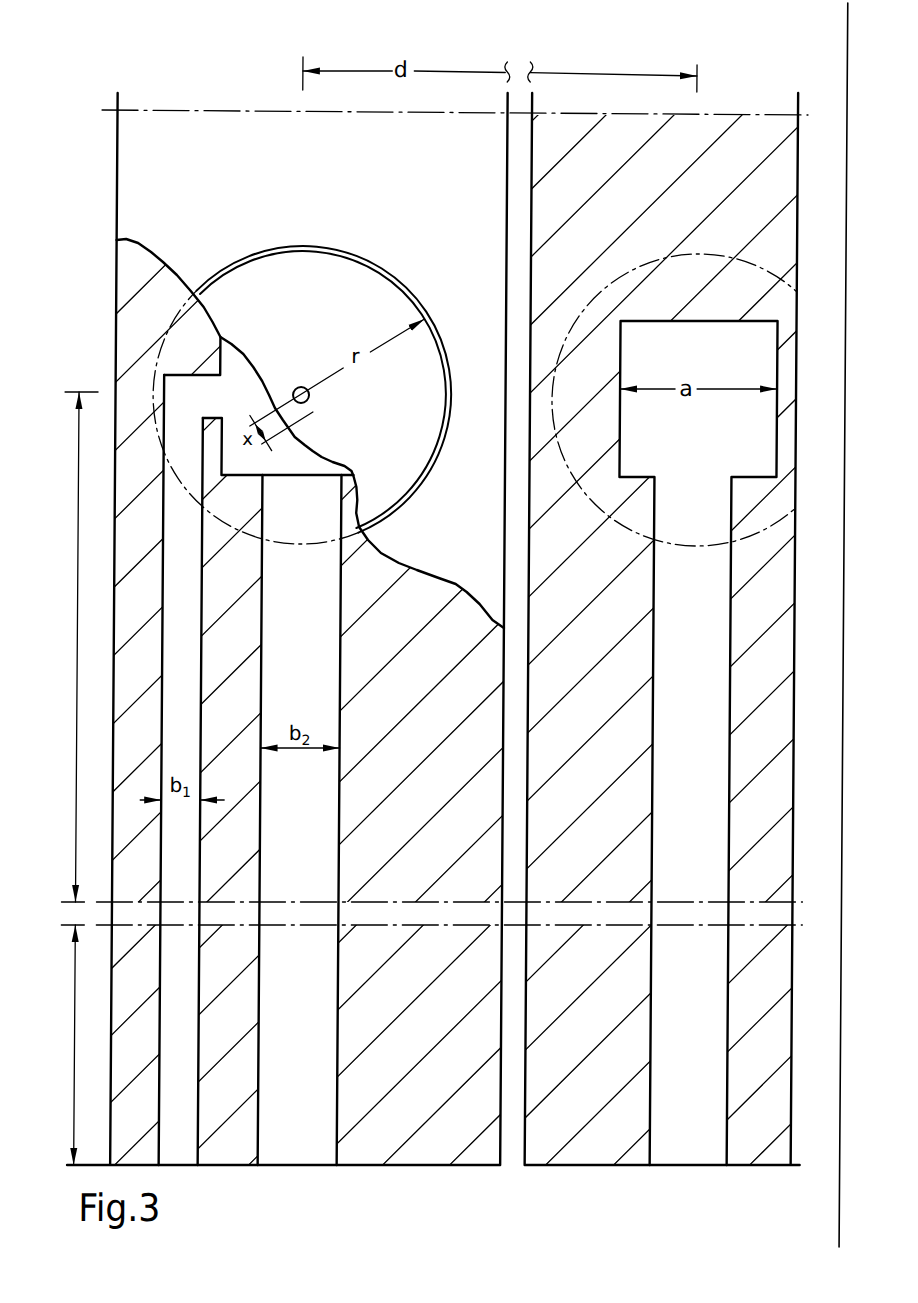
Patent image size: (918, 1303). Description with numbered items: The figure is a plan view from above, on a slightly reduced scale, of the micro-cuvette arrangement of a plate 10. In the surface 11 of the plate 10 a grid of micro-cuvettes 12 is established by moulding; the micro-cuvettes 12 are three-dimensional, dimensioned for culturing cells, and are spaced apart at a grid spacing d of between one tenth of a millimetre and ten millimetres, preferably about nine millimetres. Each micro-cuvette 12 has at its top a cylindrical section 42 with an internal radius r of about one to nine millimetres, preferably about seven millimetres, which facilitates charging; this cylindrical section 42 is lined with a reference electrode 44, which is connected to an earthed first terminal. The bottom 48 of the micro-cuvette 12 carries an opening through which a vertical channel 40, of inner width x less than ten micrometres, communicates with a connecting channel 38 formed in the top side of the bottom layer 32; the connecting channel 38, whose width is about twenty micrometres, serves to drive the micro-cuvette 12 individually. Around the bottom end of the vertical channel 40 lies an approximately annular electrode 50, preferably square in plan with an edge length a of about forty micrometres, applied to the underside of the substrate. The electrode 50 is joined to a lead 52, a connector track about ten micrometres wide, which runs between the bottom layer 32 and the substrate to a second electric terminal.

The plate 10 is at (438, 666).
The surface 11 is at (455, 92).
The micro-cuvette 12 is at (294, 343).
The bottom layer 32 is at (380, 1135).
The connecting channel 38 is at (308, 1138).
The vertical channel 40 is at (302, 386).
The cylindrical section 42 is at (442, 363).
The reference electrode 44 is at (395, 278).
The bottom 48 is at (259, 317).
The electrode 50 is at (303, 456).
The lead 52 is at (190, 1150).